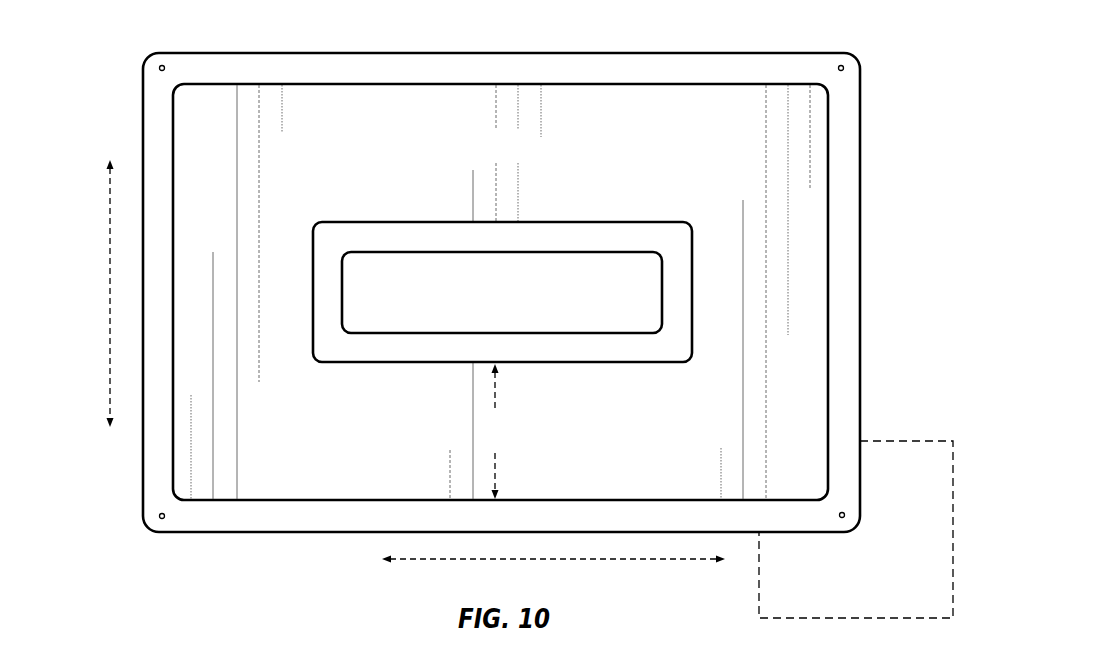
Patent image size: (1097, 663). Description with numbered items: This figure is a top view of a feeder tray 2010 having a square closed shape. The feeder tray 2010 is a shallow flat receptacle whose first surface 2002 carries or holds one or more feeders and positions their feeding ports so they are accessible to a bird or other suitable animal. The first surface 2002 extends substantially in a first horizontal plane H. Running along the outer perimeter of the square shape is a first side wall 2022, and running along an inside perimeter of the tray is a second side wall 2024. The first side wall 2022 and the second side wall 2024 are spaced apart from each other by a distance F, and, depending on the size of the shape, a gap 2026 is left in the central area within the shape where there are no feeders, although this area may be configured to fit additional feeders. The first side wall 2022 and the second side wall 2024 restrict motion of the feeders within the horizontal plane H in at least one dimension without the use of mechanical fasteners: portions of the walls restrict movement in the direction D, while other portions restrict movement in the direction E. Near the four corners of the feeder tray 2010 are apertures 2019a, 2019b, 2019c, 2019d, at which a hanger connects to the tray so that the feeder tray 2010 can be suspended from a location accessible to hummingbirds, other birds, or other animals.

The first surface 2002 is at (530, 158).
The feeder tray 2010 is at (118, 473).
The aperture 2019a is at (160, 519).
The aperture 2019b is at (160, 67).
The aperture 2019c is at (844, 68).
The aperture 2019d is at (843, 518).
The first side wall 2022 is at (355, 496).
The second side wall 2024 is at (386, 366).
The gap 2026 is at (495, 299).
The direction D is at (107, 212).
The direction E is at (637, 562).
The distance F is at (494, 431).
The first horizontal plane H is at (912, 438).